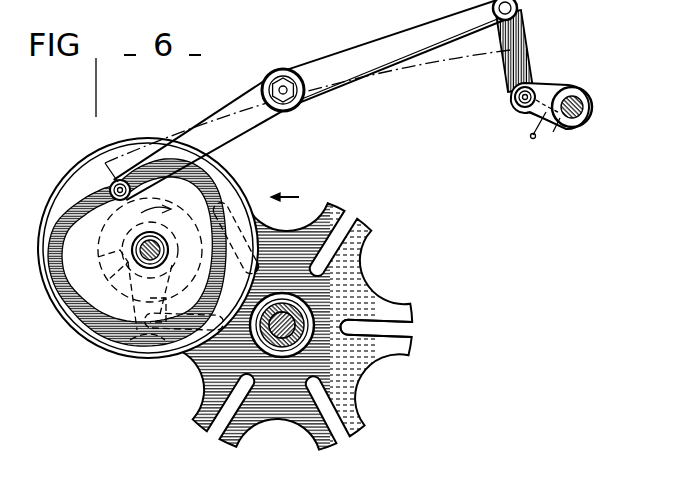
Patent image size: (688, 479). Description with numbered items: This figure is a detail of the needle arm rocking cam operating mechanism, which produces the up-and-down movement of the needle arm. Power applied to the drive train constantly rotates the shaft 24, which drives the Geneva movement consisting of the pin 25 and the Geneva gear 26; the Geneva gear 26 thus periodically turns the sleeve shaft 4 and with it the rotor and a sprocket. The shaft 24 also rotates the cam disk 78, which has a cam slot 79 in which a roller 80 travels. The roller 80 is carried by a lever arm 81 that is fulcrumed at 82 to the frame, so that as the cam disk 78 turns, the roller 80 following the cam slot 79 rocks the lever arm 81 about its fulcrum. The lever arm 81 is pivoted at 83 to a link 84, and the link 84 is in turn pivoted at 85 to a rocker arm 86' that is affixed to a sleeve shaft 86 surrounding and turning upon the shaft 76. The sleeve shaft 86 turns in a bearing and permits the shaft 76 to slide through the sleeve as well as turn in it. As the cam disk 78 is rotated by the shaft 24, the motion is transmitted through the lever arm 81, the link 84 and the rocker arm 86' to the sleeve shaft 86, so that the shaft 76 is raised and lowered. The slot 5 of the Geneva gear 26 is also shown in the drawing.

The sleeve shaft 4 is at (318, 307).
The slot of star wheel 5 is at (322, 328).
The shaft 24 is at (135, 251).
The pin 25 is at (113, 357).
The Geneva gear 26 is at (360, 375).
The shaft 76 is at (589, 117).
The cam disk 78 is at (70, 196).
The cam slot 79 is at (60, 302).
The roller 80 is at (103, 161).
The lever arm 81 is at (214, 114).
The fulcrum 82 is at (288, 95).
The pivot 83 is at (518, 12).
The link 84 is at (532, 58).
The pivot 85 is at (513, 100).
The sleeve shaft 86 is at (523, 122).
The rocker arm 86' is at (539, 144).